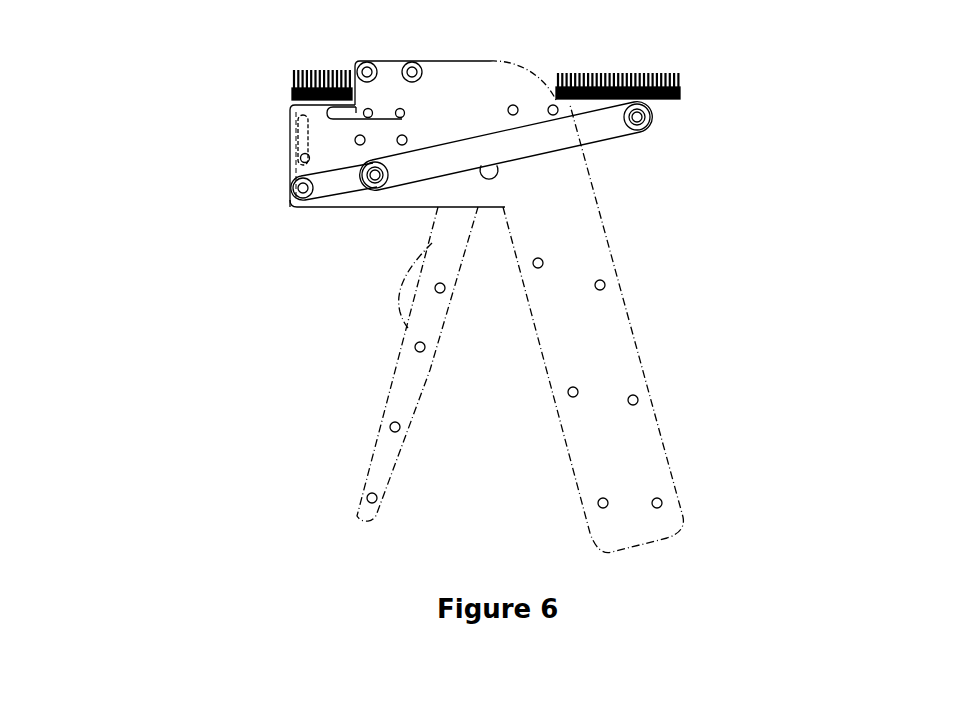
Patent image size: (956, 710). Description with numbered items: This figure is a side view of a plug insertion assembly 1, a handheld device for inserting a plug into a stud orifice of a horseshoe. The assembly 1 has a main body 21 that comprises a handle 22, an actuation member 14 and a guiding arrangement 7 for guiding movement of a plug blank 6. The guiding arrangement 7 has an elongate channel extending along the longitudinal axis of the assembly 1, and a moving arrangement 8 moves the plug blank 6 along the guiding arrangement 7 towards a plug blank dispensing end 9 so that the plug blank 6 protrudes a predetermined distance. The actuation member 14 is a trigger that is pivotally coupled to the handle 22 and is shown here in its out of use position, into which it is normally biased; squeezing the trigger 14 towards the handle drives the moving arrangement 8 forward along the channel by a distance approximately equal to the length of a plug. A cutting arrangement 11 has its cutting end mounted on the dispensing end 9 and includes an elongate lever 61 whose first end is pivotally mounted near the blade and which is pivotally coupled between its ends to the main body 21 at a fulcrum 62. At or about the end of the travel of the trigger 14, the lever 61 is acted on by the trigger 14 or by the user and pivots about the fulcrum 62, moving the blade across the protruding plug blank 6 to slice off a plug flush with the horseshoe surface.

The plug insertion assembly 1 is at (165, 133).
The guiding arrangement 7 is at (465, 88).
The main body 21 is at (495, 90).
The plug blank 6 is at (598, 86).
The plug blank dispensing end 9 is at (293, 157).
The cutting arrangement 11 is at (603, 117).
The elongate lever 61 is at (511, 203).
The fulcrum 62 is at (373, 173).
The actuation member 14 is at (340, 364).
The moving arrangement 8 is at (430, 330).
The handle 22 is at (607, 420).